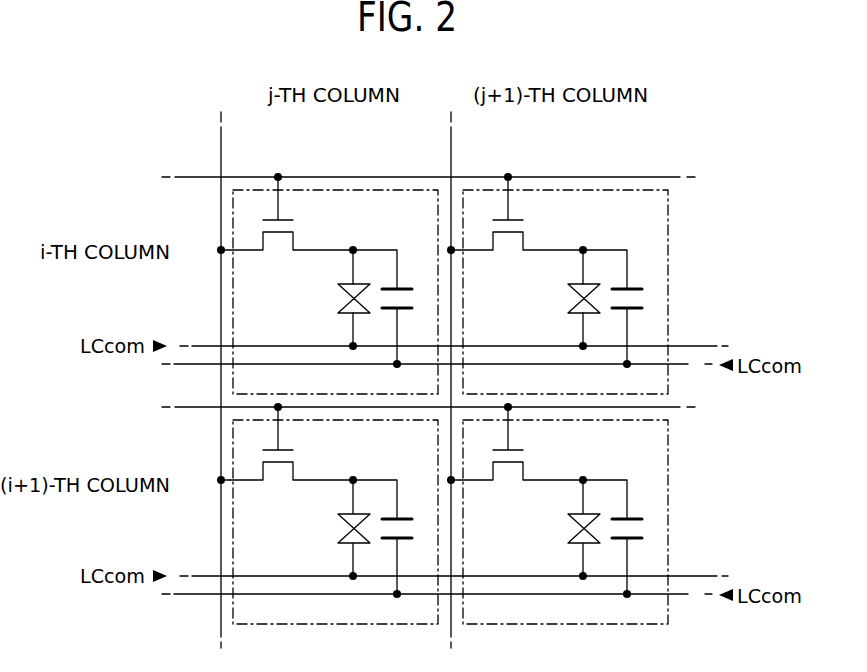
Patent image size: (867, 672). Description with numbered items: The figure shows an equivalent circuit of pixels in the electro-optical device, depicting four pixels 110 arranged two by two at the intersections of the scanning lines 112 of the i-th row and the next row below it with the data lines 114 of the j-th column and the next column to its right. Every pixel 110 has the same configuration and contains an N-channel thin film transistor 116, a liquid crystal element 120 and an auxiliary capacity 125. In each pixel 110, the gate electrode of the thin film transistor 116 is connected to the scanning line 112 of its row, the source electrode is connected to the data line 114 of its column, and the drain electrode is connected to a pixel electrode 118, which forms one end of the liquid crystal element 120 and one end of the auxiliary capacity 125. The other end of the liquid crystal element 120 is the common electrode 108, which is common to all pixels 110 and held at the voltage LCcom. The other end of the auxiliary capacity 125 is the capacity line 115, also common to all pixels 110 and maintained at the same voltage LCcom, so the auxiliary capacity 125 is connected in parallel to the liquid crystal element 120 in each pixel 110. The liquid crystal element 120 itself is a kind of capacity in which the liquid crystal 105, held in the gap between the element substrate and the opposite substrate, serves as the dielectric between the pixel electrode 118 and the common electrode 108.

The liquid crystal 105 is at (343, 300).
The common electrode 108 is at (205, 343).
The pixel 110 is at (382, 190).
The scanning line 112 is at (204, 177).
The data line 114 is at (222, 163).
The capacity line 115 is at (688, 366).
The thin film transistor 116 is at (295, 238).
The pixel electrode 118 is at (343, 280).
The liquid crystal element 120 is at (318, 312).
The auxiliary capacity 125 is at (417, 281).